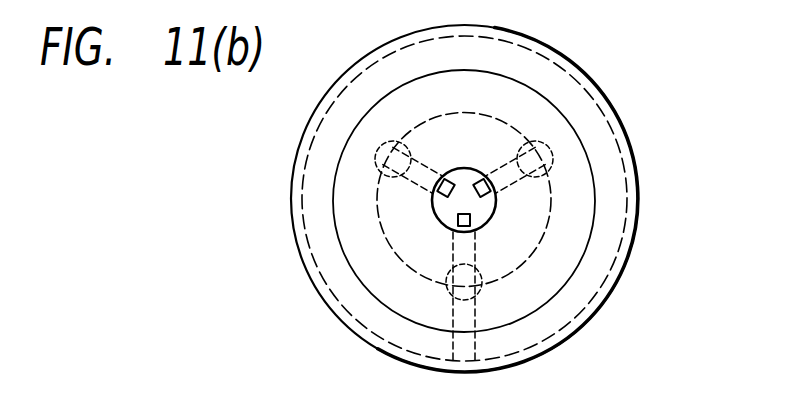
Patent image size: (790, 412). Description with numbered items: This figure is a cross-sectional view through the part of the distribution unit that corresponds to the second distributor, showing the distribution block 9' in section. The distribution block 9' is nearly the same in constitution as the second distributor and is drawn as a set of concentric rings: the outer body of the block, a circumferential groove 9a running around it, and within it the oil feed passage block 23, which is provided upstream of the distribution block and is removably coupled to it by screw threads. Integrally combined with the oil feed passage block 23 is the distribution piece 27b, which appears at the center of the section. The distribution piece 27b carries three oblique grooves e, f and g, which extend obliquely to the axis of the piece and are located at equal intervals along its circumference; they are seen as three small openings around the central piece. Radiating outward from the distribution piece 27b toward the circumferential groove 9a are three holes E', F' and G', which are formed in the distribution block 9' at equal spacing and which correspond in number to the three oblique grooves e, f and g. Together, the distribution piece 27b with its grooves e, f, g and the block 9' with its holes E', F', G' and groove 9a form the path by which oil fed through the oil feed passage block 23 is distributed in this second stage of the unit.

The distribution block 9' is at (490, 198).
The circumferential groove 9a is at (590, 327).
The oil feed passage block 23 is at (512, 201).
The distribution piece 27b is at (548, 200).
The hole E' is at (409, 145).
The hole F' is at (519, 145).
The hole G' is at (440, 297).
The oblique groove e is at (446, 159).
The oblique groove f is at (496, 211).
The oblique groove g is at (438, 222).